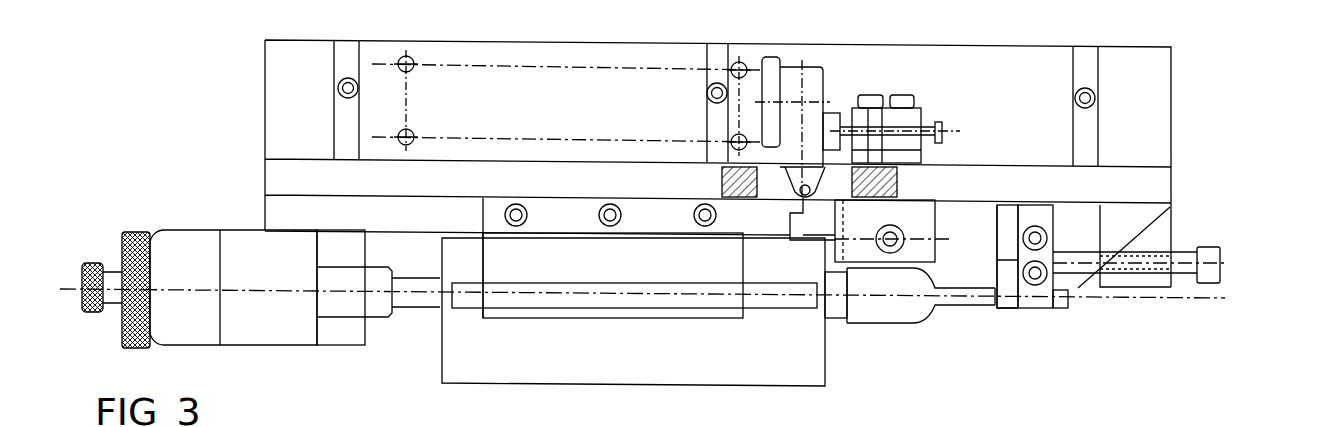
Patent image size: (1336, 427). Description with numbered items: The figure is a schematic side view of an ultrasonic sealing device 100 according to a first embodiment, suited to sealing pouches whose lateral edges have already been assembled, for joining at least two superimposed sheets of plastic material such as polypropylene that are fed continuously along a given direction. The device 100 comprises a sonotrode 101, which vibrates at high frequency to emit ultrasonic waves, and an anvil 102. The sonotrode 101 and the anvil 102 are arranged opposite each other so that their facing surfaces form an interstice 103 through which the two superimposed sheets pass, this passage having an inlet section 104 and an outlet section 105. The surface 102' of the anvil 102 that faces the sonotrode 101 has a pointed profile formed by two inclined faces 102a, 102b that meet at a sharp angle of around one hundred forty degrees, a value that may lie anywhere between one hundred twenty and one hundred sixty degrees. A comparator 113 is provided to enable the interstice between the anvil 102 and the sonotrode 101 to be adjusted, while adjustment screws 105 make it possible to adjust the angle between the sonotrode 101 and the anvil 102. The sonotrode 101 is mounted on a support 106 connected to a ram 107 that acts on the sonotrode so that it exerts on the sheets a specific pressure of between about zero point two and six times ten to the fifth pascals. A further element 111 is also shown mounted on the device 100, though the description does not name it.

The ultrasonic sealing device 100 is at (1208, 122).
The sonotrode 101 is at (933, 312).
The anvil 102 is at (1053, 305).
The surface of the anvil 102' is at (982, 240).
The inclined face 102a is at (1004, 312).
The inclined face 102b is at (1010, 312).
The interstice 103 is at (996, 312).
The inlet section 104 is at (1079, 288).
The adjustment screws 105 is at (1210, 276).
The support 106 is at (758, 363).
The ram 107 is at (259, 323).
The mounting bracket 111 is at (925, 110).
The comparator 113 is at (826, 98).